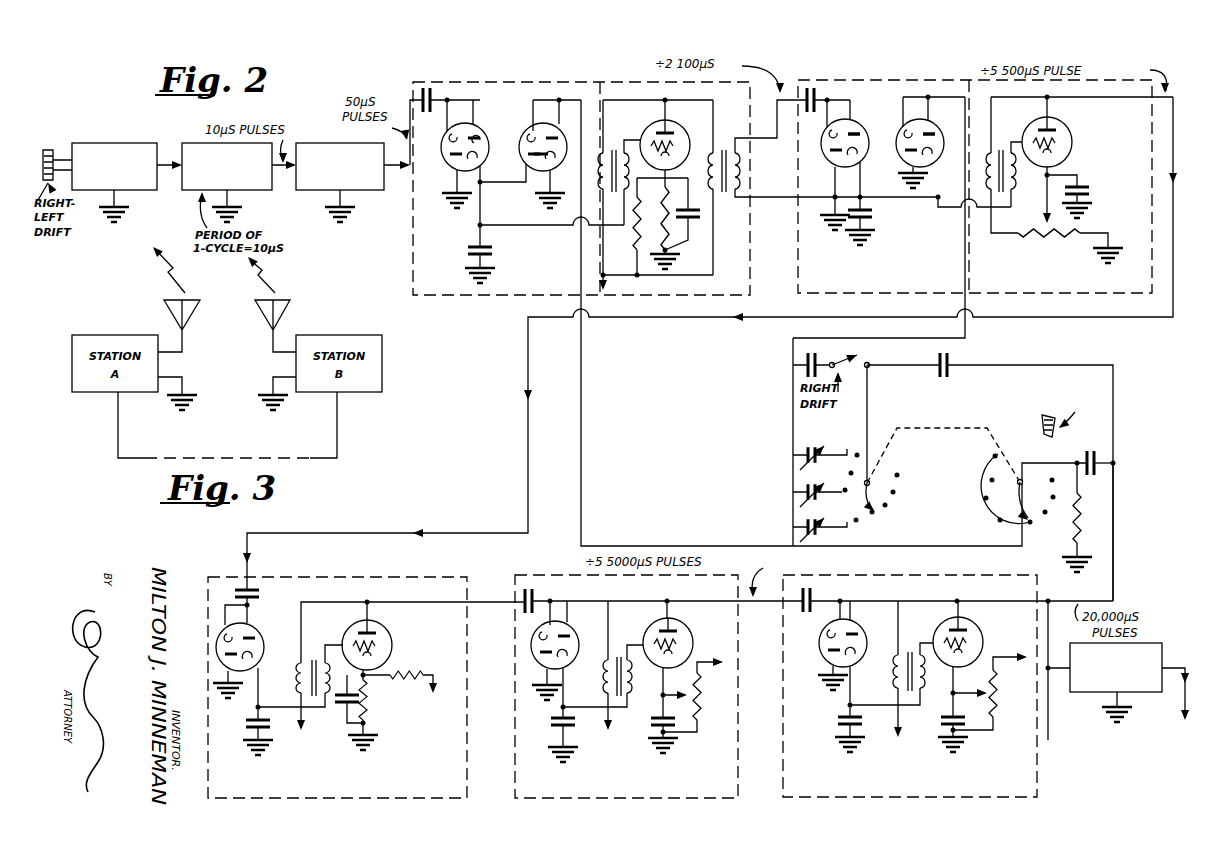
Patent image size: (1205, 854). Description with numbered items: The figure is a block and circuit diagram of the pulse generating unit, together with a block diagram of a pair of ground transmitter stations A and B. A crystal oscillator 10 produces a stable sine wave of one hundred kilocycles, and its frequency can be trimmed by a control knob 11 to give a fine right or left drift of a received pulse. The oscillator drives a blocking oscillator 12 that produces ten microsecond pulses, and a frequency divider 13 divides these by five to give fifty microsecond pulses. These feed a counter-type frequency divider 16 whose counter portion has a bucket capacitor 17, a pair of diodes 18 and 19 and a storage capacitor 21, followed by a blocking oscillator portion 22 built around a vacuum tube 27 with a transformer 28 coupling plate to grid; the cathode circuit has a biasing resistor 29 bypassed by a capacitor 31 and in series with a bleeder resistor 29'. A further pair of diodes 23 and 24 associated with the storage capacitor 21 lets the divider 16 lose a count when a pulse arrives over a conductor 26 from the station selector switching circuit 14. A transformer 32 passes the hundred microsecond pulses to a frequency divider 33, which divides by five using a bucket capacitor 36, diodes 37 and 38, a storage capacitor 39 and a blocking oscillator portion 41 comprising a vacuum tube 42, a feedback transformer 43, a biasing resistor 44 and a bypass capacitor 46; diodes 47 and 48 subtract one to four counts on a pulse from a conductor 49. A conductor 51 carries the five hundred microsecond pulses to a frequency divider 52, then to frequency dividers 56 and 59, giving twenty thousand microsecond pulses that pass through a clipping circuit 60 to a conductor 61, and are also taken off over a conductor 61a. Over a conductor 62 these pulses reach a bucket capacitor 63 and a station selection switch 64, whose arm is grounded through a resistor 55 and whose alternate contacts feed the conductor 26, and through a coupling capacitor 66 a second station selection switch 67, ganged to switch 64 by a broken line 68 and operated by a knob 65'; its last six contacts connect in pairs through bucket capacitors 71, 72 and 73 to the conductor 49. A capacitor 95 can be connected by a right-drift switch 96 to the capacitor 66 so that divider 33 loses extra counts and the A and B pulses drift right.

In FIG. 2, the crystal oscillator 10 is at (89, 143).
In FIG. 2, the control knob 11 is at (49, 150).
In FIG. 2, the blocking oscillator 12 is at (190, 143).
In FIG. 2, the frequency divider 13 is at (310, 192).
In FIG. 3, the station selector switching circuit 14 is at (958, 486).
In FIG. 3, the frequency divider 16 is at (570, 84).
In FIG. 3, the input or bucket capacitor 17 is at (428, 88).
In FIG. 3, the diode 18 is at (448, 150).
In FIG. 3, the diode 19 is at (478, 139).
In FIG. 3, the storage capacitor 21 is at (463, 250).
In FIG. 3, the blocking oscillator portion 22 is at (630, 125).
In FIG. 3, the diode 23 is at (530, 153).
In FIG. 3, the diode 24 is at (551, 155).
In FIG. 3, the conductor 26 is at (581, 430).
In FIG. 3, the vacuum tube 27 is at (672, 126).
In FIG. 3, the transformer 28 is at (656, 241).
In FIG. 3, the biasing resistor 29 is at (680, 229).
In FIG. 3, the bleeder resistor 29' is at (624, 228).
In FIG. 3, the capacitor 31 is at (694, 211).
In FIG. 3, the transformer 32 is at (727, 146).
In FIG. 3, the frequency divider 33 is at (903, 80).
In FIG. 3, the bucket capacitor 36 is at (815, 87).
In FIG. 3, the diode 37 is at (830, 153).
In FIG. 3, the diode 38 is at (859, 135).
In FIG. 3, the storage capacitor 39 is at (872, 212).
In FIG. 3, the blocking oscillator portion 41 is at (1013, 125).
In FIG. 3, the vacuum tube 42 is at (1066, 130).
In FIG. 3, the feedback transformer 43 is at (1005, 209).
In FIG. 3, the biasing resistor 44 is at (1060, 238).
In FIG. 3, the bypass capacitor 46 is at (1090, 190).
In FIG. 3, the diode 47 is at (903, 155).
In FIG. 3, the diode 48 is at (926, 129).
In FIG. 3, the conductor 49 is at (965, 255).
In FIG. 3, the conductor 51 is at (1173, 140).
In FIG. 3, the frequency divider 52 is at (208, 577).
In FIG. 3, the resistor 55 is at (1085, 522).
In FIG. 3, the frequency divider 56 is at (515, 692).
In FIG. 3, the frequency divider 59 is at (783, 664).
In FIG. 3, the clipping circuit 60 is at (1162, 645).
In FIG. 3, the conductor 61 is at (1182, 706).
In FIG. 3, the conductor 61a is at (1048, 726).
In FIG. 3, the conductor 62 is at (1113, 556).
In FIG. 3, the bucket capacitor 63 is at (1100, 453).
In FIG. 3, the station selection switch 64 is at (1018, 488).
In FIG. 3, the knob 65' is at (1049, 419).
In FIG. 3, the coupling or blocking capacitor 66 is at (955, 354).
In FIG. 3, the station selection switch 67 is at (879, 490).
In FIG. 3, the broken line 68 is at (962, 428).
In FIG. 3, the bucket capacitor 71 is at (804, 527).
In FIG. 3, the bucket capacitor 72 is at (805, 492).
In FIG. 3, the bucket capacitor 73 is at (805, 455).
In FIG. 3, the capacitor 95 is at (805, 360).
In FIG. 3, the right-drift switch 96 is at (858, 357).